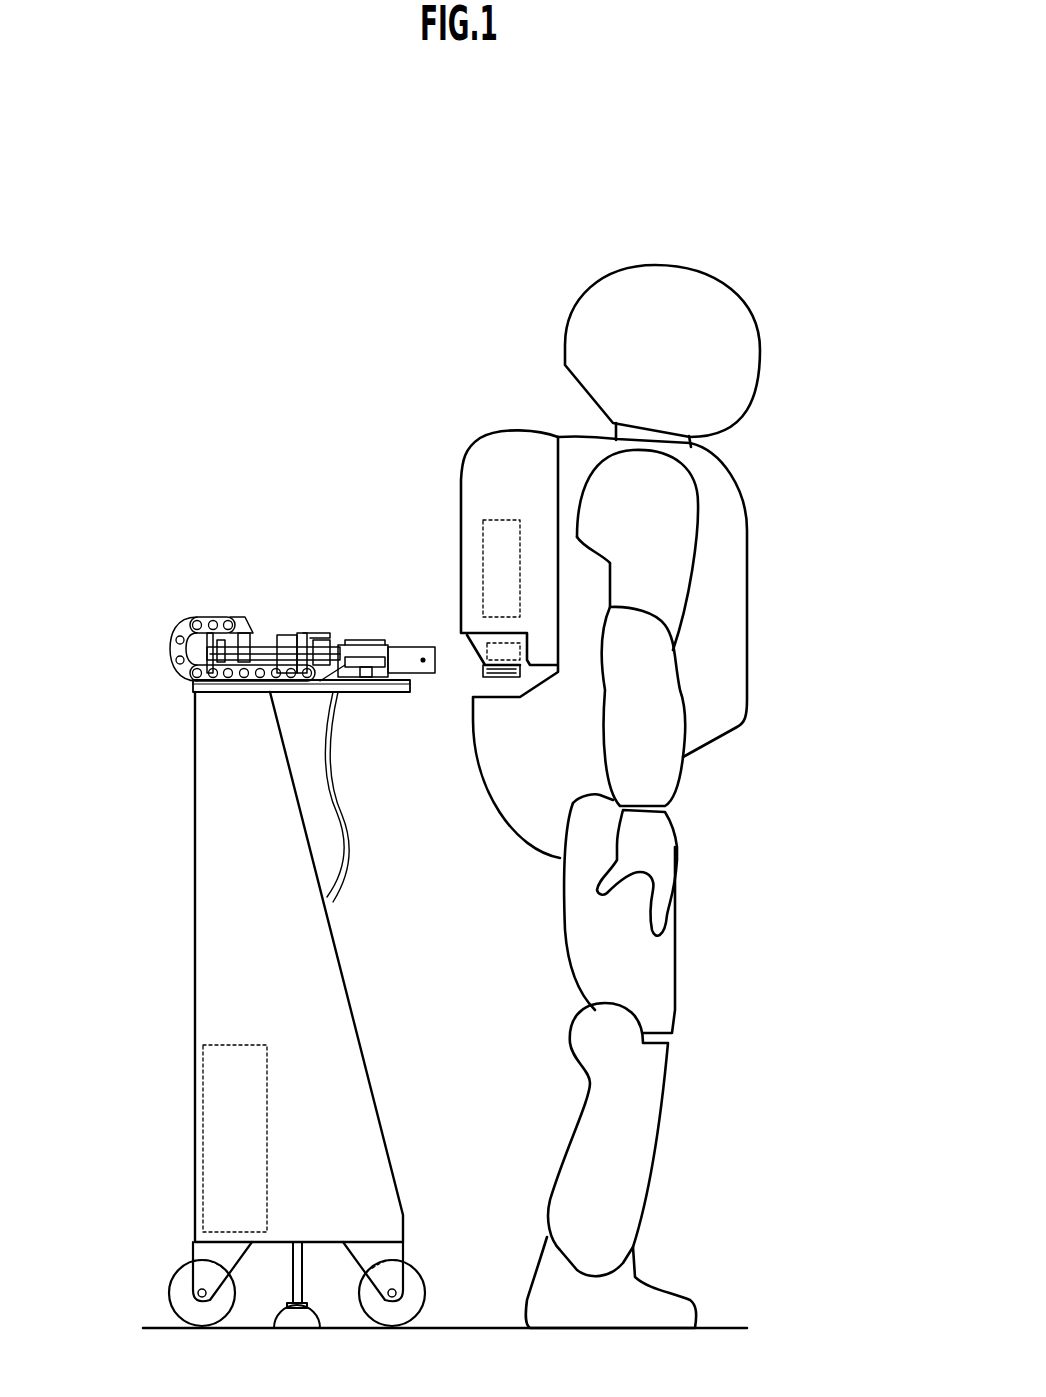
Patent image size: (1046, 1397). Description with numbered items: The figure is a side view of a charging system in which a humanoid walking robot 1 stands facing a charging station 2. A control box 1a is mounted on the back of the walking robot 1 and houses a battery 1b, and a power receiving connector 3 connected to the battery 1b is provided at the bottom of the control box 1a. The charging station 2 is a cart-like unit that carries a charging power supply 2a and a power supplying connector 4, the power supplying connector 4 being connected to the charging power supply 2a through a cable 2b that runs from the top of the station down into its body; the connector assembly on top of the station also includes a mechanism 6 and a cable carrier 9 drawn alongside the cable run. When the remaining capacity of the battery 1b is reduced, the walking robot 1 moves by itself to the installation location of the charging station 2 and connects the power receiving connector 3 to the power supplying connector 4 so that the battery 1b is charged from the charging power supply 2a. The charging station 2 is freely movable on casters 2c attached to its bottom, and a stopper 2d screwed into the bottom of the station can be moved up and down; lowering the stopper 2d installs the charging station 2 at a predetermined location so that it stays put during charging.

The humanoid walking robot 1 is at (764, 575).
The control box 1a is at (510, 430).
The battery 1b is at (495, 520).
The charging station 2 is at (187, 792).
The charging power supply 2a is at (230, 1044).
The cable 2b is at (347, 850).
The casters 2c is at (190, 1264).
The stopper 2d is at (308, 1306).
The power receiving connector 3 is at (487, 678).
The power supplying connector 4 is at (412, 645).
The actuator 6 is at (368, 640).
The cable carrier 9 is at (205, 617).